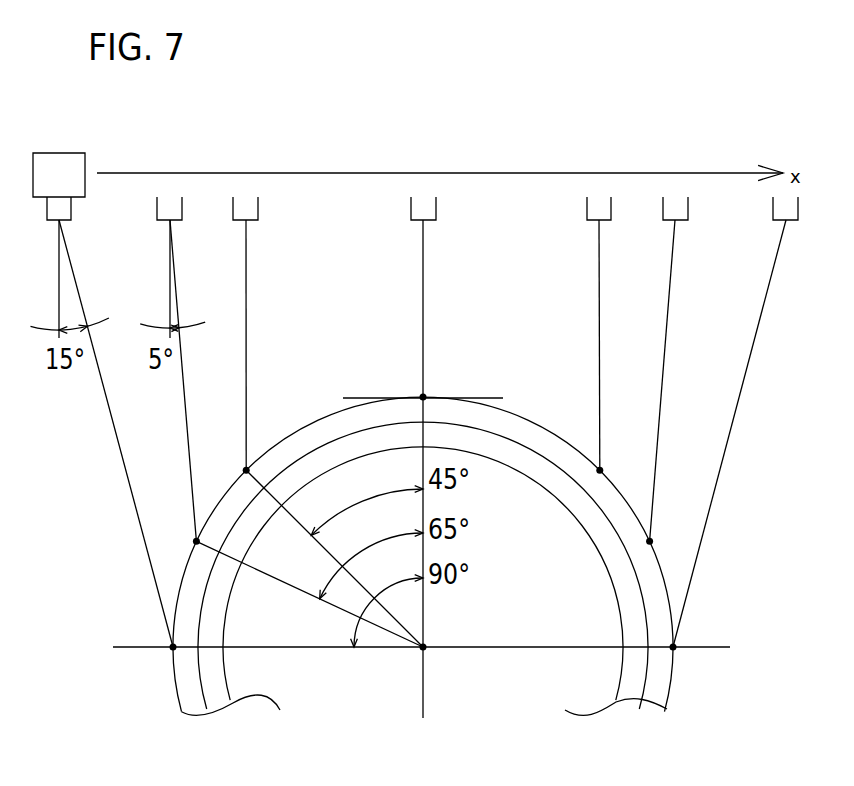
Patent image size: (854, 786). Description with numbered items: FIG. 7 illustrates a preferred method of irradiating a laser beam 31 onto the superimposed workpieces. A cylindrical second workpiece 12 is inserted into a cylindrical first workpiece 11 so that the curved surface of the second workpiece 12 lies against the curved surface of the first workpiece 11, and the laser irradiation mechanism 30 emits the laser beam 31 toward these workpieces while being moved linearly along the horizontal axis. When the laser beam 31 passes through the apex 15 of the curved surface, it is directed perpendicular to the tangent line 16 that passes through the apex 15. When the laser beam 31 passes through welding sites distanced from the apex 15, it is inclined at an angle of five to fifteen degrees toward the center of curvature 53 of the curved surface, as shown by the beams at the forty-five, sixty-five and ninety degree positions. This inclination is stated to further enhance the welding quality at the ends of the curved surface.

The laser irradiation mechanism 30 is at (55, 165).
The laser beam 31 is at (118, 453).
The first workpiece 11 is at (660, 672).
The second workpiece 12 is at (628, 671).
The apex 15 is at (428, 390).
The tangent line 16 is at (360, 397).
The center of curvature 53 is at (417, 657).